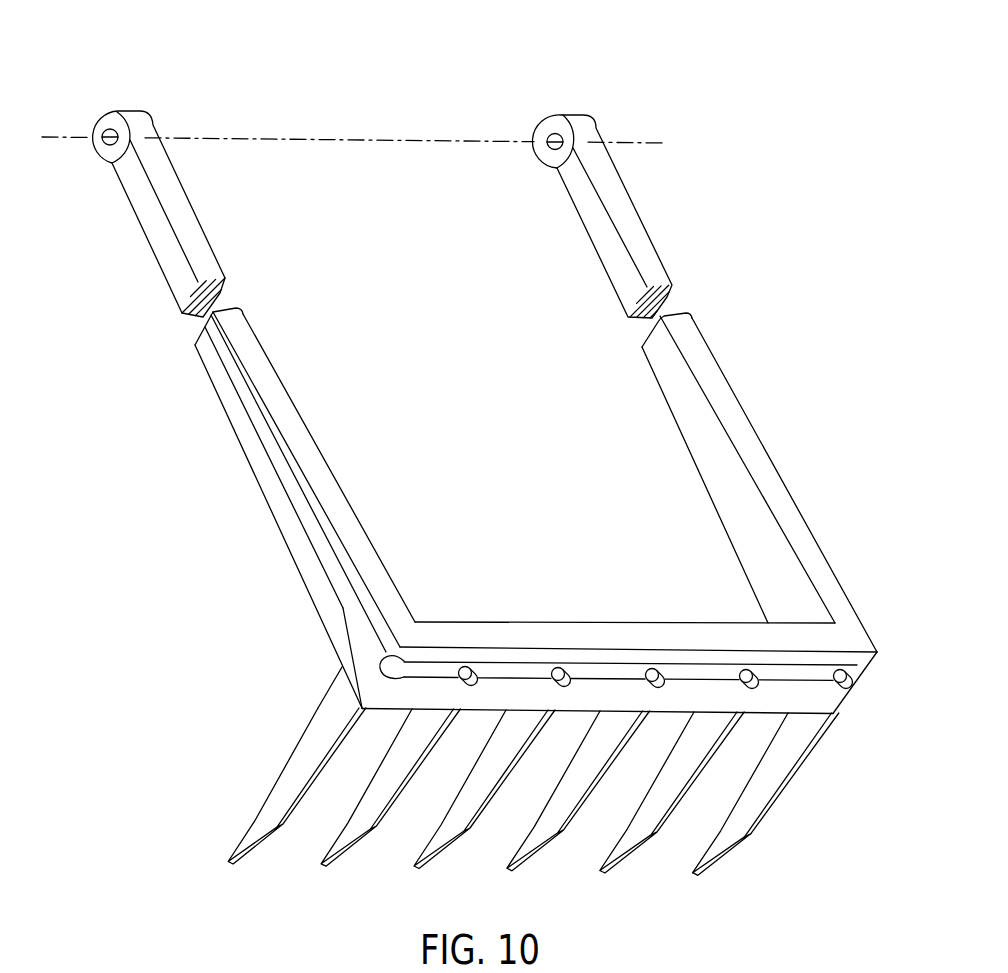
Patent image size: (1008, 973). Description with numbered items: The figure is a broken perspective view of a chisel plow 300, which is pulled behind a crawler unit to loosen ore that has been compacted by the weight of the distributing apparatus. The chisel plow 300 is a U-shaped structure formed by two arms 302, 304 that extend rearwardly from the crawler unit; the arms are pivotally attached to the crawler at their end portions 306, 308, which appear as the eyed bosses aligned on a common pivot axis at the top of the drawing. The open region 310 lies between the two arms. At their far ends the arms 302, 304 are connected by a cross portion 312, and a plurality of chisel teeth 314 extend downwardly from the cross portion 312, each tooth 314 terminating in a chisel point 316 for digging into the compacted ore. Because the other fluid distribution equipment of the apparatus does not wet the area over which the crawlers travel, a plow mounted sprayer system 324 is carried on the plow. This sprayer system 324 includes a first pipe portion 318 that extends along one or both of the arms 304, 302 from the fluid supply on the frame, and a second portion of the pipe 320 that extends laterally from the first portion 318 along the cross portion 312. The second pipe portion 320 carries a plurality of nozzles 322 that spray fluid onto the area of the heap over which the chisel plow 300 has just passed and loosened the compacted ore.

The chisel plow 300 is at (846, 545).
The arm 302 is at (775, 466).
The arm 304 is at (305, 508).
The end portion 306 is at (582, 112).
The end portion 308 is at (140, 111).
The opening 310 is at (558, 479).
The cross portion 312 is at (696, 621).
The chisel teeth 314 is at (544, 797).
The chisel point 316 is at (704, 862).
The first pipe portion 318 is at (346, 607).
The second portion of the pipe 320 is at (603, 666).
The nozzles 322 is at (553, 668).
The plow mounted sprayer system 324 is at (318, 565).